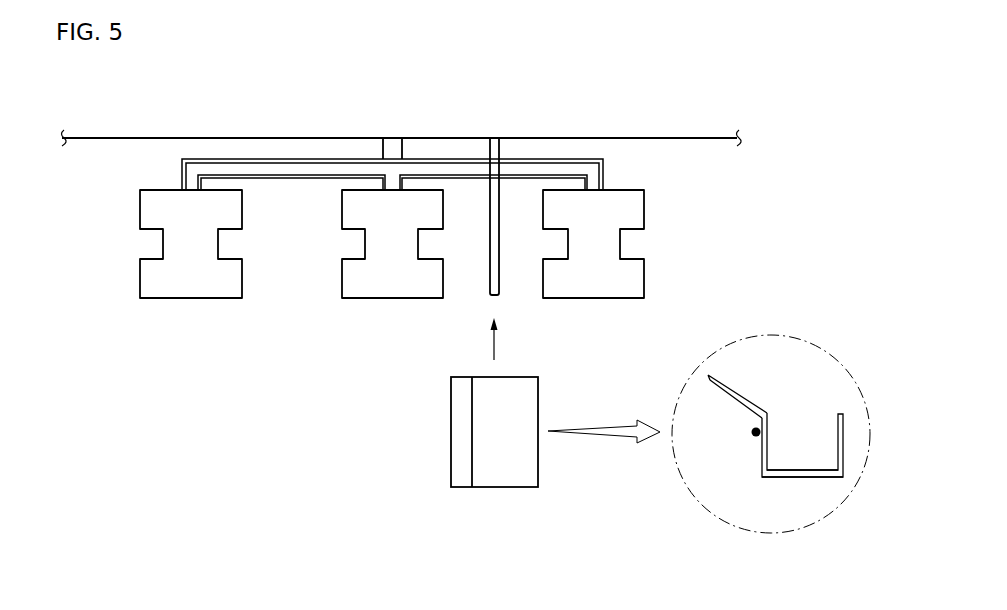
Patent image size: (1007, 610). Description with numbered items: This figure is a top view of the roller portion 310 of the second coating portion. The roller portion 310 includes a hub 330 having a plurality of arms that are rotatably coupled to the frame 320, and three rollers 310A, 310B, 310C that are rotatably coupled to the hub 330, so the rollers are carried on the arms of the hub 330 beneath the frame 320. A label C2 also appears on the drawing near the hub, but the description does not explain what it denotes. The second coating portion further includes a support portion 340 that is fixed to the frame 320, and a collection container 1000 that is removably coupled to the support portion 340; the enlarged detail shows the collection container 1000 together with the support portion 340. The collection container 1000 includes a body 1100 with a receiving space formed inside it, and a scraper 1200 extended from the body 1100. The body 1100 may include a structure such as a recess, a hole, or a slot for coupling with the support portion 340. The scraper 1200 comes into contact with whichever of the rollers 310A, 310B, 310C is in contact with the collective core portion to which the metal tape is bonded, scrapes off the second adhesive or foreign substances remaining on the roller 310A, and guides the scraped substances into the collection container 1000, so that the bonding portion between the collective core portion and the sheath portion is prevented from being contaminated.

The frame 320 is at (684, 136).
The hub 330 is at (272, 166).
The capacitor C2 is at (393, 148).
The support portion 340 is at (501, 207).
The roller portion 310 is at (383, 289).
The roller 310A is at (378, 298).
The roller 310B is at (178, 298).
The roller 310C is at (592, 298).
The collection container 1000 is at (696, 427).
The body 1100 is at (807, 477).
The scraper 1200 is at (742, 392).